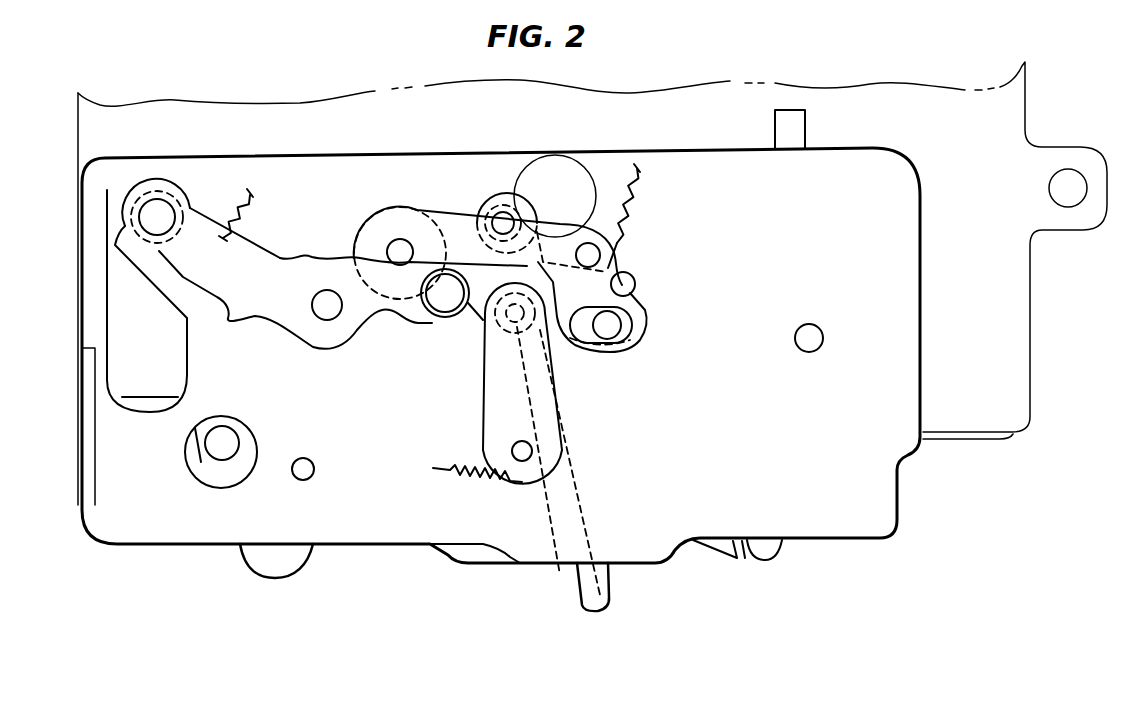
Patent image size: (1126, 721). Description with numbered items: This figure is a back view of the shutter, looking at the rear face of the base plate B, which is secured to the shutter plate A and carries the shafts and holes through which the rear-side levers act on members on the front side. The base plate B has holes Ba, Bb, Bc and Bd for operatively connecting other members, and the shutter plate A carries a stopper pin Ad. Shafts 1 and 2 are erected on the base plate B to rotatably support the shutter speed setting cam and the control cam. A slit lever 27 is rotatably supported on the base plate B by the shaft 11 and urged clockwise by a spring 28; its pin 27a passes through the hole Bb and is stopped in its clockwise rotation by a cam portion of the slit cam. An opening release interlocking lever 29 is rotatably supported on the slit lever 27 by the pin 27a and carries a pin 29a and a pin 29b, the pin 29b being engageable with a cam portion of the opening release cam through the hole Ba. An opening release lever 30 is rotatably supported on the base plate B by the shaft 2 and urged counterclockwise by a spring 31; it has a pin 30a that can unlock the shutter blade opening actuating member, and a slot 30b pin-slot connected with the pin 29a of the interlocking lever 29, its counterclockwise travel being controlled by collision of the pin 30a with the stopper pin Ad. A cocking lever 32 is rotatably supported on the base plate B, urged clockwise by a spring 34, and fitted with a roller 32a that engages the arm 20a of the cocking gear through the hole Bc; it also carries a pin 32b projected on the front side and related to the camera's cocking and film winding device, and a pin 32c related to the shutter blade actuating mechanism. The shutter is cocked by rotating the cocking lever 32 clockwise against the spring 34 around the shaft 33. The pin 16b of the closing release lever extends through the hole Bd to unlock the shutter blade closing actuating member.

The shutter plate A is at (953, 400).
The base plate B is at (830, 480).
The arm of cocking gear 20a is at (123, 247).
The cocking lever 32 is at (278, 268).
The hole in base plate Bc is at (140, 184).
The roller 32a is at (157, 196).
The pin 32b is at (167, 212).
The spring 34 is at (247, 193).
The shaft 33 is at (323, 290).
The pin 32c is at (442, 269).
The shaft 2 is at (400, 239).
The opening release lever 30 is at (370, 242).
The pin 30a is at (585, 243).
The slot 30b is at (632, 294).
The shaft 1 is at (637, 283).
The pin 29a is at (610, 328).
The spring 31 is at (636, 166).
The hole in base plate Ba is at (490, 206).
The pin 29b is at (497, 205).
The stopper pin Ad is at (502, 214).
The opening release interlocking lever 29 is at (518, 320).
The slit lever 27 is at (512, 460).
The shaft 11 is at (527, 462).
The spring 28 is at (463, 468).
The pin 27a is at (560, 575).
The hole in base plate Bb is at (600, 595).
The hole in base plate Bd is at (200, 456).
The pin 16b is at (222, 460).